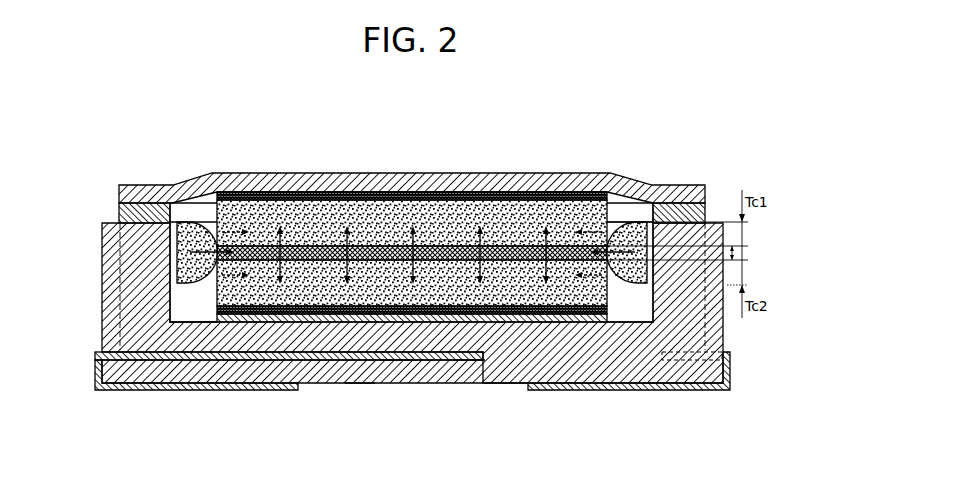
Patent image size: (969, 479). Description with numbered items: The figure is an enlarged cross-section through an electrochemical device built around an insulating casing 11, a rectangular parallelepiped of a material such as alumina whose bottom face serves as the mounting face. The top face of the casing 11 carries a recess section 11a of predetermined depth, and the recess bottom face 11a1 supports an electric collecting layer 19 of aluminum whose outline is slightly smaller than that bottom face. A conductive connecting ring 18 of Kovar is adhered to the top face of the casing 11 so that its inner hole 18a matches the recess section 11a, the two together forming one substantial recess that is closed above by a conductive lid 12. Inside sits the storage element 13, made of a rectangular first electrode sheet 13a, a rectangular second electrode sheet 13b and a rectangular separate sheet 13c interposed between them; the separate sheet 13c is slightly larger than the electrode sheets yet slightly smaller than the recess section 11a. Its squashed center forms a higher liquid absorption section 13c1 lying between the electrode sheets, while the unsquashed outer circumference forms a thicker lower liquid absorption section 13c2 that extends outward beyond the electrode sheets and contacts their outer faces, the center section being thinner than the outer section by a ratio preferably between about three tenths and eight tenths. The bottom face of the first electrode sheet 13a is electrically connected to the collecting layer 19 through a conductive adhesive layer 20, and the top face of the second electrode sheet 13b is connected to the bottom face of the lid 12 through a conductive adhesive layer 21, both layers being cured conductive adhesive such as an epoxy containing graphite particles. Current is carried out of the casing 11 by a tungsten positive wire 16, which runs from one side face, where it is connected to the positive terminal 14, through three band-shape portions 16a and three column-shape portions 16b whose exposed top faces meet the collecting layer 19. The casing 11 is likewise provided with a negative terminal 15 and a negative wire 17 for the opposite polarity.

The casing 11 is at (102, 266).
The recess section 11a is at (185, 298).
The bottom surface of recess 11a1 is at (195, 326).
The conductive lid 12 is at (119, 191).
The storage element 13 is at (412, 205).
The first electrode sheet 13a is at (260, 280).
The second electrode sheet 13b is at (327, 223).
The separate sheet 13c is at (296, 250).
The higher liquid absorption section 13c1 is at (498, 196).
The lower liquid absorption section 13c2 is at (638, 223).
The positive terminal 14 is at (109, 390).
The negative terminal 15 is at (720, 390).
The positive wire 16 is at (150, 378).
The band-shape portions 16a is at (395, 360).
The column-shape portions 16b is at (361, 381).
The negative wire 17 is at (675, 360).
The connecting ring 18 is at (119, 214).
The inner hole 18a is at (186, 212).
The electric collecting layer 19 is at (312, 356).
The conductive adhesive layer 20 is at (565, 385).
The conductive adhesive layer 21 is at (575, 194).